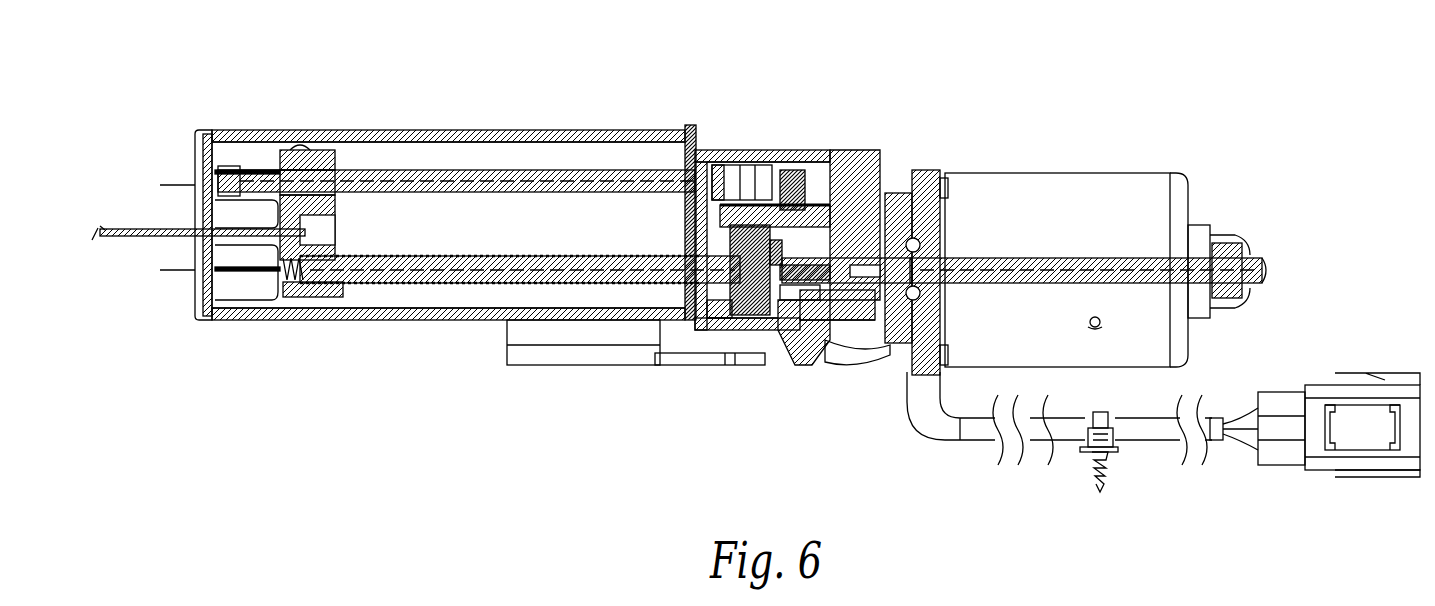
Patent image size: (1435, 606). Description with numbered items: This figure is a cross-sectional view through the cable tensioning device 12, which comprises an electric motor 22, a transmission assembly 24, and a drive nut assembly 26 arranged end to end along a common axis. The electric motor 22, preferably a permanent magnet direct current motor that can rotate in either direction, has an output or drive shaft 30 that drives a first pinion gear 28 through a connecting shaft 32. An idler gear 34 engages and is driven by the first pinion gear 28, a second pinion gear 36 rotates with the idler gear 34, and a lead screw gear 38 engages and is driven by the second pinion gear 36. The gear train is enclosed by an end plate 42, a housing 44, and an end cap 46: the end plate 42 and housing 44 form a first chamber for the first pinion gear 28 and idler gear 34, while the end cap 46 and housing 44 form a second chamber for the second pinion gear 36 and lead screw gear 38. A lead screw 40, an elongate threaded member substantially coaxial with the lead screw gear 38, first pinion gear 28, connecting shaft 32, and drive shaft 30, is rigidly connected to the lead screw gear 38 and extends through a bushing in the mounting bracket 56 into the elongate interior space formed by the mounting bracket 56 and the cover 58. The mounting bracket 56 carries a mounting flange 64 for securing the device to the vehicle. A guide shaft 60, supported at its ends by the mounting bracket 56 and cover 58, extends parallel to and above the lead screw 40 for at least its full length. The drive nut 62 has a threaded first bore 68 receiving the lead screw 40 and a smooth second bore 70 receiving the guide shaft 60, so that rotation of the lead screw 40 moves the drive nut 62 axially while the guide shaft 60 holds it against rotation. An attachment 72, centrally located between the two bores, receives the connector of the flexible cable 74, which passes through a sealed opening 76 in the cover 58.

The cable tensioning device 12 is at (514, 482).
The electric motor 22 is at (1030, 173).
The transmission assembly 24 is at (796, 146).
The drive nut assembly 26 is at (520, 126).
The first pinion gear 28 is at (782, 340).
The drive shaft 30 is at (1105, 255).
The connecting shaft 32 is at (862, 258).
The idler gear 34 is at (840, 170).
The second pinion gear 36 is at (758, 175).
The lead screw gear 38 is at (755, 330).
The lead screw 40 is at (460, 284).
The end plate 42 is at (842, 370).
The housing 44 is at (810, 364).
The end cap 46 is at (717, 333).
The mounting bracket 56 is at (690, 125).
The cover 58 is at (612, 130).
The guide shaft 60 is at (570, 172).
The drive nut 62 is at (325, 160).
The mounting flange 64 is at (675, 367).
The first bore 68 is at (360, 286).
The second bore 70 is at (340, 185).
The attachment 72 is at (336, 228).
The flexible cable 74 is at (230, 232).
The opening 76 is at (215, 245).